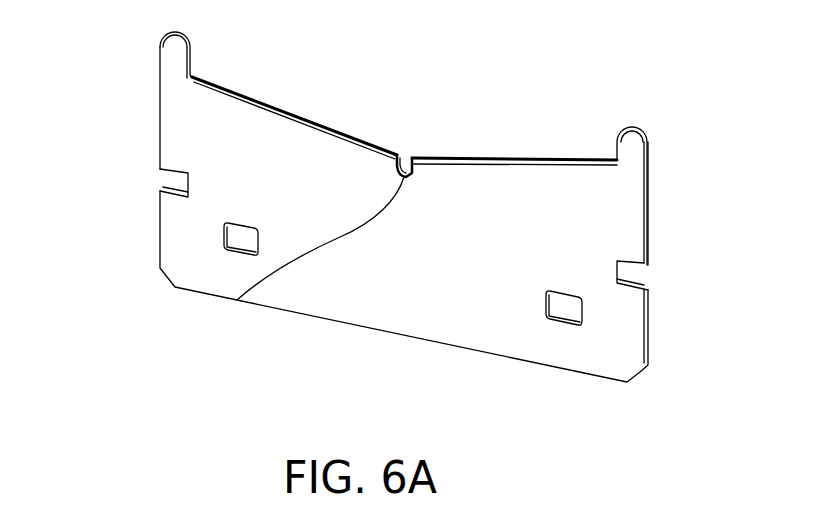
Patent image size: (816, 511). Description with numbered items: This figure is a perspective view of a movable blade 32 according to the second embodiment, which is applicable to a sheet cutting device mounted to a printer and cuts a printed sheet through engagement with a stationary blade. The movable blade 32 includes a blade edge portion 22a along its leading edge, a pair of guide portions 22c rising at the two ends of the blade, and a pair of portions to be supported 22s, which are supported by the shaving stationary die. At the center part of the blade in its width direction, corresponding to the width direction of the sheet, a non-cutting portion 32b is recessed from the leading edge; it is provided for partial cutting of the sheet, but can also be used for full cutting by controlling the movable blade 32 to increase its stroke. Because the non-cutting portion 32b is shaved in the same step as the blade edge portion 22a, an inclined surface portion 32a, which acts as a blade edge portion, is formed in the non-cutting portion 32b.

The movable blade 32 is at (333, 338).
The inclined surface portion 32a is at (237, 300).
The non-cutting portion 32b is at (403, 158).
The blade edge portion 22a is at (295, 108).
The guide portions 22c is at (170, 60).
The portions to be supported 22s is at (168, 183).